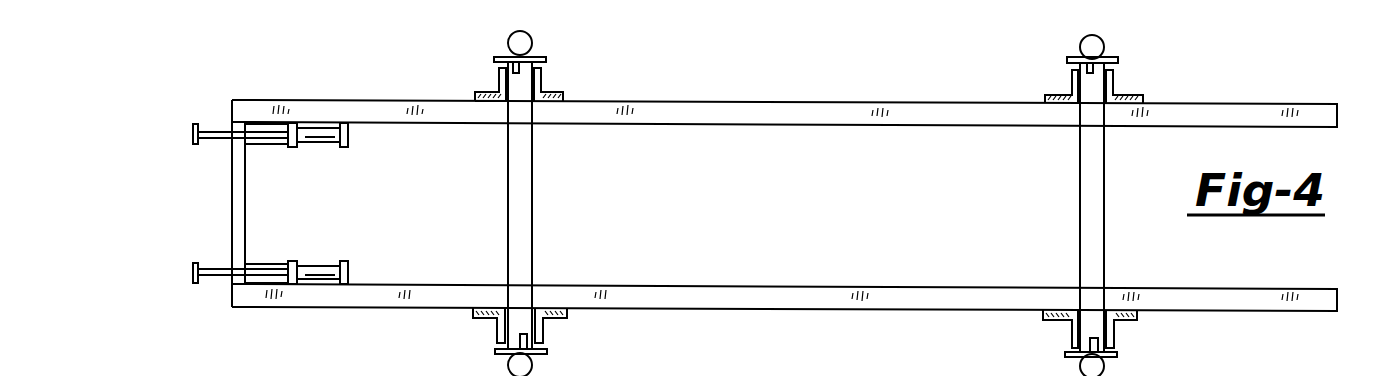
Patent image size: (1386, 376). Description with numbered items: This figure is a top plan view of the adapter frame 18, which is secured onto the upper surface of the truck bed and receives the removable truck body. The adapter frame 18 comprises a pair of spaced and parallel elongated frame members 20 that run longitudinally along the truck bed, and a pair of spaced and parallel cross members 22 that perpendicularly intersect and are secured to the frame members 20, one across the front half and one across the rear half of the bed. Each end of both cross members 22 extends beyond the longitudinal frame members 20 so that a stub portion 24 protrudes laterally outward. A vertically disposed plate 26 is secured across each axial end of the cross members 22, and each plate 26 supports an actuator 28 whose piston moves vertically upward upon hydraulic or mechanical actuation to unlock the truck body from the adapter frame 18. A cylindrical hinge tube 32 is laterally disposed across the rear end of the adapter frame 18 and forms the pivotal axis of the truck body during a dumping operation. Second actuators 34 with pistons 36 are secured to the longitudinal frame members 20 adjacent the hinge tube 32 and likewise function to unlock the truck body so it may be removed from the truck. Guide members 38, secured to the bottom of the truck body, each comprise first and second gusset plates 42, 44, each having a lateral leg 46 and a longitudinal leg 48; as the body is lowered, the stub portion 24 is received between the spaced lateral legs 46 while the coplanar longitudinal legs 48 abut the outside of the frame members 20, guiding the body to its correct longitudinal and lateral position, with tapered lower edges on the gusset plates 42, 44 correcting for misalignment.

The adapter frame 18 is at (916, 24).
The elongated frame members 20 is at (784, 110).
The cross members 22 is at (521, 250).
The stub portion 24 is at (802, 197).
The plate 26 is at (502, 56).
The actuator 28 is at (537, 44).
The hinge tube 32 is at (236, 200).
The second actuators 34 is at (323, 148).
The pistons 36 is at (216, 131).
The guide members 38 is at (500, 83).
The first gusset plate 42 is at (490, 102).
The second gusset plate 44 is at (553, 104).
The lateral leg 46 is at (540, 85).
The longitudinal leg 48 is at (556, 93).